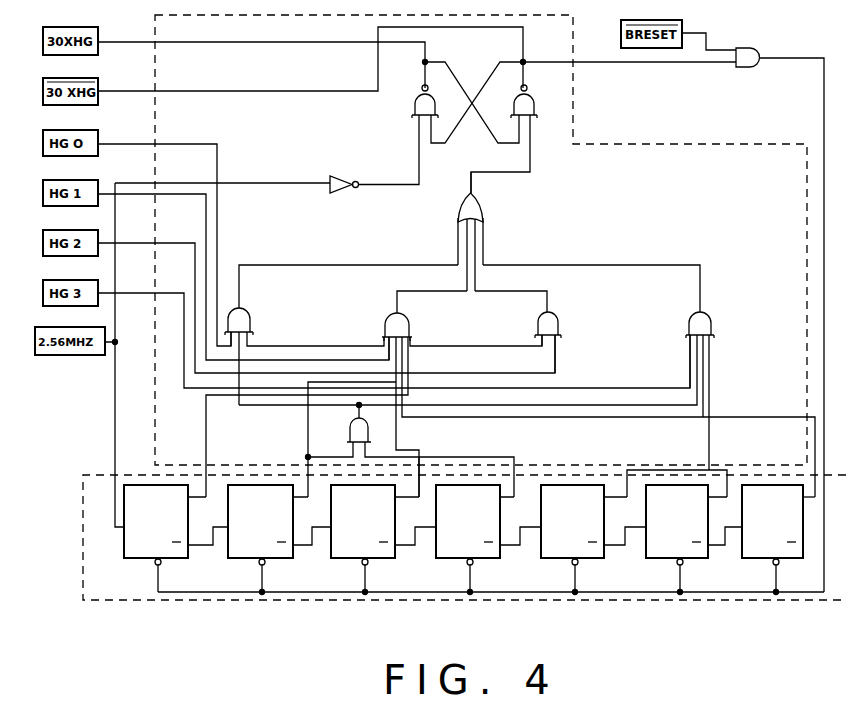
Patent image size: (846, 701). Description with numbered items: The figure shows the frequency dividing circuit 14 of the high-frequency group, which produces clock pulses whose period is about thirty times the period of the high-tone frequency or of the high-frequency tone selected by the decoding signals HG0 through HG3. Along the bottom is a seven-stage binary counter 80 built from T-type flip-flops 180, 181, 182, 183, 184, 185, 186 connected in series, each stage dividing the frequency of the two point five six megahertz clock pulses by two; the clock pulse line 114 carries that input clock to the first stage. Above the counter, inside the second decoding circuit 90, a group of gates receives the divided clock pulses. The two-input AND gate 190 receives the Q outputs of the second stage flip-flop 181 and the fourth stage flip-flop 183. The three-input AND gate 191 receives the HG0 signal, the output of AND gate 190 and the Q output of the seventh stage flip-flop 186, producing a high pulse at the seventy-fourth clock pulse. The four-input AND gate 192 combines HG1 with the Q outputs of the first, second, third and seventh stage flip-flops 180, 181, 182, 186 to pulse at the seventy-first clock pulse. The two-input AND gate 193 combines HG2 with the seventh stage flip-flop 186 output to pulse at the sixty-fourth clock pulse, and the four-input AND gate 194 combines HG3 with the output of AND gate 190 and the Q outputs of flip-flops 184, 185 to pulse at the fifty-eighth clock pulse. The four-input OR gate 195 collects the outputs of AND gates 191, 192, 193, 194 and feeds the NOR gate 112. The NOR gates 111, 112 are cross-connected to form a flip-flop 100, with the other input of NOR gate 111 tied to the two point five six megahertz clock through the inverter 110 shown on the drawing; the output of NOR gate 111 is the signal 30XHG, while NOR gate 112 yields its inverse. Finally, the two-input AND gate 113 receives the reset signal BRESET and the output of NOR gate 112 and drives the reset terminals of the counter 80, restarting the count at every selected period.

The frequency dividing circuit 14 is at (805, 42).
The 7-stage binary counter 80 is at (83, 548).
The second decoding circuit 90 is at (574, 118).
The flip-flop 100 is at (493, 119).
The inverter 110 is at (341, 175).
The NOR gate 111 is at (436, 100).
The NOR gate 112 is at (535, 106).
The two-input AND gate 113 is at (749, 47).
The clock line 114 is at (115, 393).
The first stage T-type flip-flop 180 is at (176, 560).
The second stage T-type flip-flop 181 is at (280, 560).
The third stage T-type flip-flop 182 is at (383, 560).
The fourth stage T-type flip-flop 183 is at (488, 560).
The fifth stage T-type flip-flop 184 is at (593, 560).
The sixth stage T-type flip-flop 185 is at (698, 560).
The seventh stage T-type flip-flop 186 is at (794, 560).
The two-input AND gate 190 is at (349, 436).
The three-input AND gate 191 is at (251, 323).
The four-input AND gate 192 is at (410, 326).
The two-input AND gate 193 is at (559, 326).
The four-input AND gate 194 is at (712, 326).
The four-input OR gate 195 is at (484, 212).